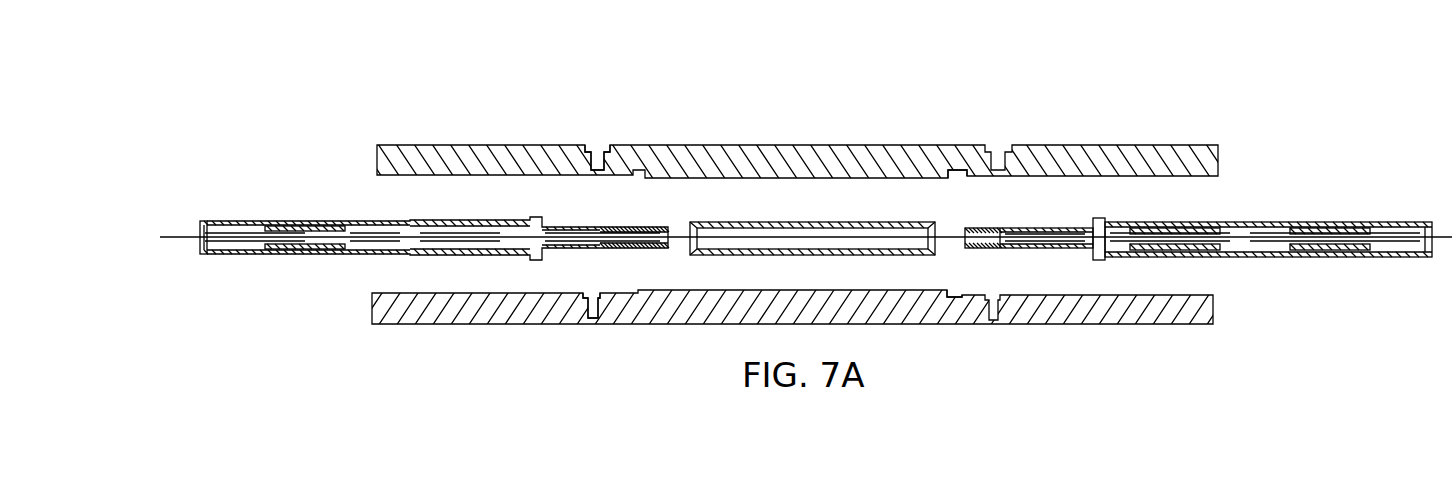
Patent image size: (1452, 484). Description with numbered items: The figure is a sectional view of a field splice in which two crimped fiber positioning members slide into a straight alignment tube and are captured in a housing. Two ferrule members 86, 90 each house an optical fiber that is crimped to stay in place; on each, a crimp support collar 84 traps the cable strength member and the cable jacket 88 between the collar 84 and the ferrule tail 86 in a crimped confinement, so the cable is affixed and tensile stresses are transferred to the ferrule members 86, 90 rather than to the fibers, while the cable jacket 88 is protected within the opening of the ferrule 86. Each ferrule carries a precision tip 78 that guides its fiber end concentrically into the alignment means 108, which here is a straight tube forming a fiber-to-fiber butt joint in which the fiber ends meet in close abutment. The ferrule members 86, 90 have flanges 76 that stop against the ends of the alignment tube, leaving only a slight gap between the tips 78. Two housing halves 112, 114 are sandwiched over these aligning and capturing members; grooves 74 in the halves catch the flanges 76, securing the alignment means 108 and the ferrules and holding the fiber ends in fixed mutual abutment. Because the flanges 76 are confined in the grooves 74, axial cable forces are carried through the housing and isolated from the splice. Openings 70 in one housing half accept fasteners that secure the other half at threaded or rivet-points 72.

The openings 70 is at (598, 145).
The threaded or rivet-points 72 is at (590, 316).
The grooves 74 is at (957, 177).
The flanges 76 is at (1102, 261).
The tips 78 is at (1018, 226).
The crimp support collar 84 is at (278, 221).
The ferrule member 86 is at (335, 221).
The cable jacket 88 is at (208, 255).
The ferrule member 90 is at (1198, 221).
The alignment means 108 is at (868, 222).
The housing half 112 is at (452, 145).
The housing half 114 is at (398, 325).